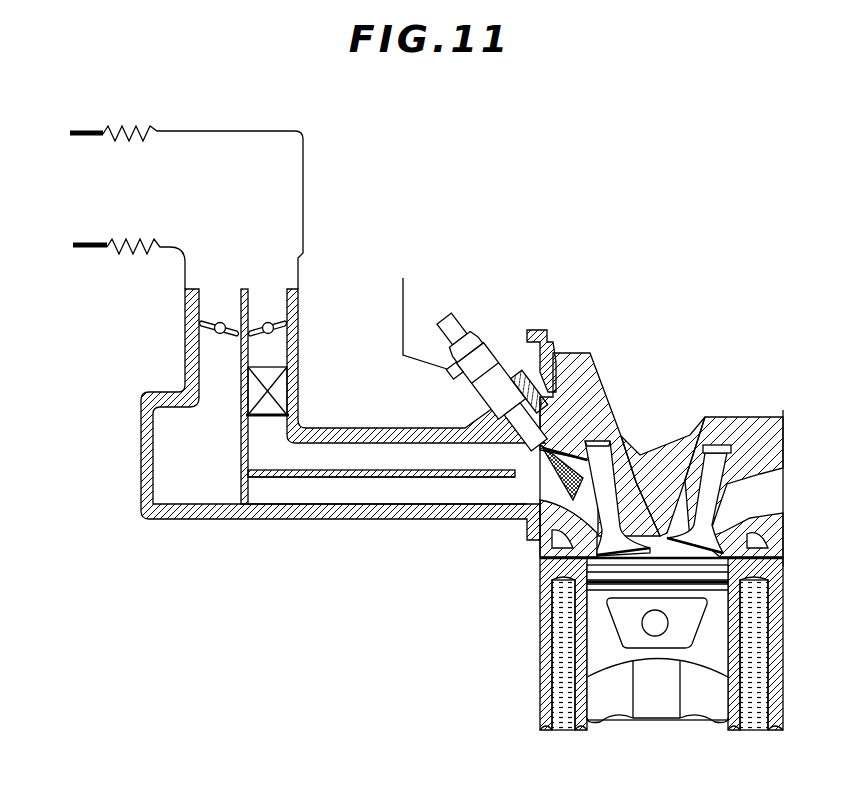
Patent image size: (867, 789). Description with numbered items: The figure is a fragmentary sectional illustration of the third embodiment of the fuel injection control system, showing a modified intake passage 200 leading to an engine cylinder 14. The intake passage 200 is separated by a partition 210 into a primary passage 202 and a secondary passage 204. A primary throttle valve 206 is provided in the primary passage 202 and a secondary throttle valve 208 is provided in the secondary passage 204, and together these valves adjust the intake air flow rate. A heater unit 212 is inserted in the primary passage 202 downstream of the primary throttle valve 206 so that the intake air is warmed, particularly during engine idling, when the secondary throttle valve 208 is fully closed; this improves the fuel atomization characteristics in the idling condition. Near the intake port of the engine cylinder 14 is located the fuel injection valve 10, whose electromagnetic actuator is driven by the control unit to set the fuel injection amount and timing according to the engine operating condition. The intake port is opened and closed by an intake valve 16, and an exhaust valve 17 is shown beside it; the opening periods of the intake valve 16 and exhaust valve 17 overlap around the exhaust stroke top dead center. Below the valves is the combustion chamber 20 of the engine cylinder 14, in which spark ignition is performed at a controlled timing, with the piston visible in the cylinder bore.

The fuel injection valve 10 is at (492, 379).
The engine cylinder 14 is at (777, 720).
The intake valve 16 is at (622, 533).
The exhaust valve 17 is at (698, 540).
The combustion chamber 20 is at (565, 591).
The intake passage 200 is at (203, 490).
The primary passage 202 is at (386, 452).
The secondary passage 204 is at (345, 490).
The primary throttle valve 206 is at (293, 326).
The secondary throttle valve 208 is at (188, 330).
The partition 210 is at (437, 480).
The heater unit 212 is at (284, 388).